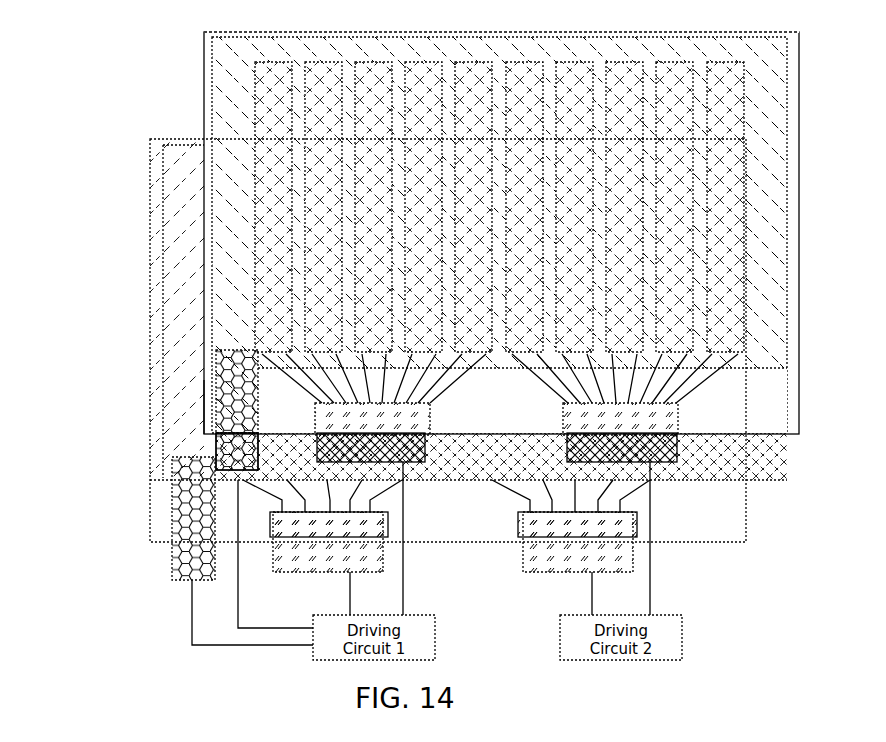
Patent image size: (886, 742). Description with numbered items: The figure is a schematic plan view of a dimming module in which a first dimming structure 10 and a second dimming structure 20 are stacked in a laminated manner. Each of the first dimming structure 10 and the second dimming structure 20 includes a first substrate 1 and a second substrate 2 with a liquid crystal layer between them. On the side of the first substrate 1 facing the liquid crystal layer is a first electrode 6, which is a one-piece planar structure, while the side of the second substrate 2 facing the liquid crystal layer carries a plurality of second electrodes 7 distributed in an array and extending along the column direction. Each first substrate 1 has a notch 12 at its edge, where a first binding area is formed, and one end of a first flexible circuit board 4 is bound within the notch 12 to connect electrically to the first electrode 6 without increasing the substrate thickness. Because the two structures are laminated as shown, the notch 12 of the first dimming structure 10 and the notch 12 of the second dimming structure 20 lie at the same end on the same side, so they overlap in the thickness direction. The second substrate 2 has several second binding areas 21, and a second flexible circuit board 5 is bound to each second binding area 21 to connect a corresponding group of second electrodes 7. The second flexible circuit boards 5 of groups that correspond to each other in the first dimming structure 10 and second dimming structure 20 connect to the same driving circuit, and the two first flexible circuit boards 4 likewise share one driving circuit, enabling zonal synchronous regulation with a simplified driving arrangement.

The first dimming structure 10 is at (428, 320).
The second dimming structure 20 is at (377, 359).
The first substrate 1 is at (205, 218).
The first electrode 6 is at (238, 270).
The second electrodes 7 is at (253, 303).
The first flexible circuit board 4 is at (216, 370).
The second substrate 2 is at (205, 408).
The notch 12 is at (258, 352).
The second flexible circuit board 5 is at (413, 457).
The second binding area 21 is at (427, 418).